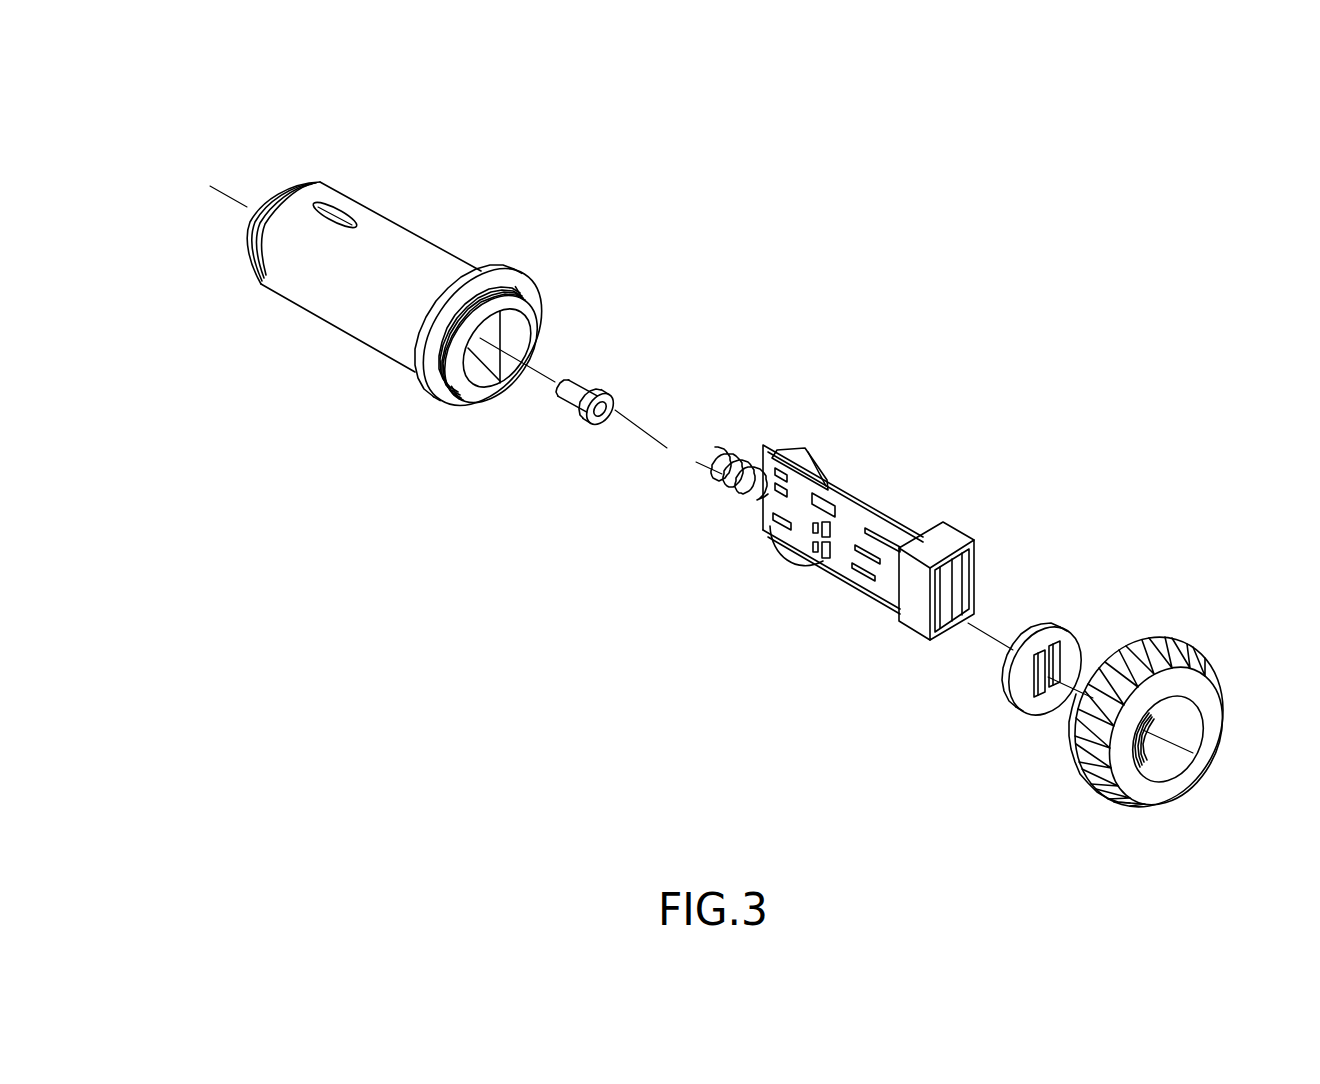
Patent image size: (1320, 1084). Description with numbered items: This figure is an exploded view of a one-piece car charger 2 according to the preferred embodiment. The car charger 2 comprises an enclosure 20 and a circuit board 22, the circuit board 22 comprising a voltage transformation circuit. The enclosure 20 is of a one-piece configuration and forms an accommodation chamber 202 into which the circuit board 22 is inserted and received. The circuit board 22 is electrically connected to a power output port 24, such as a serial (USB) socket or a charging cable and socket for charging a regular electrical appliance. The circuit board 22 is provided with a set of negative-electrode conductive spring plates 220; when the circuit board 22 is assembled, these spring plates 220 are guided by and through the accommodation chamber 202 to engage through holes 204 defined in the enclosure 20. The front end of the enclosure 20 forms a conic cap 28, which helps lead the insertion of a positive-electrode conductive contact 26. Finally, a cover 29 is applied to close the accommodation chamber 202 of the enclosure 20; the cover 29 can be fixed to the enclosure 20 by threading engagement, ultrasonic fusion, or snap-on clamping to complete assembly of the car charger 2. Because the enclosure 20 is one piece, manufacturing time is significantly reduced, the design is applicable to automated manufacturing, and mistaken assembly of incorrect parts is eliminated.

The car charger 2 is at (945, 308).
The enclosure 20 is at (440, 339).
The accommodation chamber 202 is at (485, 360).
The through holes 204 is at (338, 212).
The circuit board 22 is at (850, 509).
The negative-electrode conductive spring plates 220 is at (787, 538).
The power output port 24 is at (932, 630).
The positive-electrode conductive contact 26 is at (588, 388).
The conic cap 28 is at (247, 233).
The cover 29 is at (1200, 687).